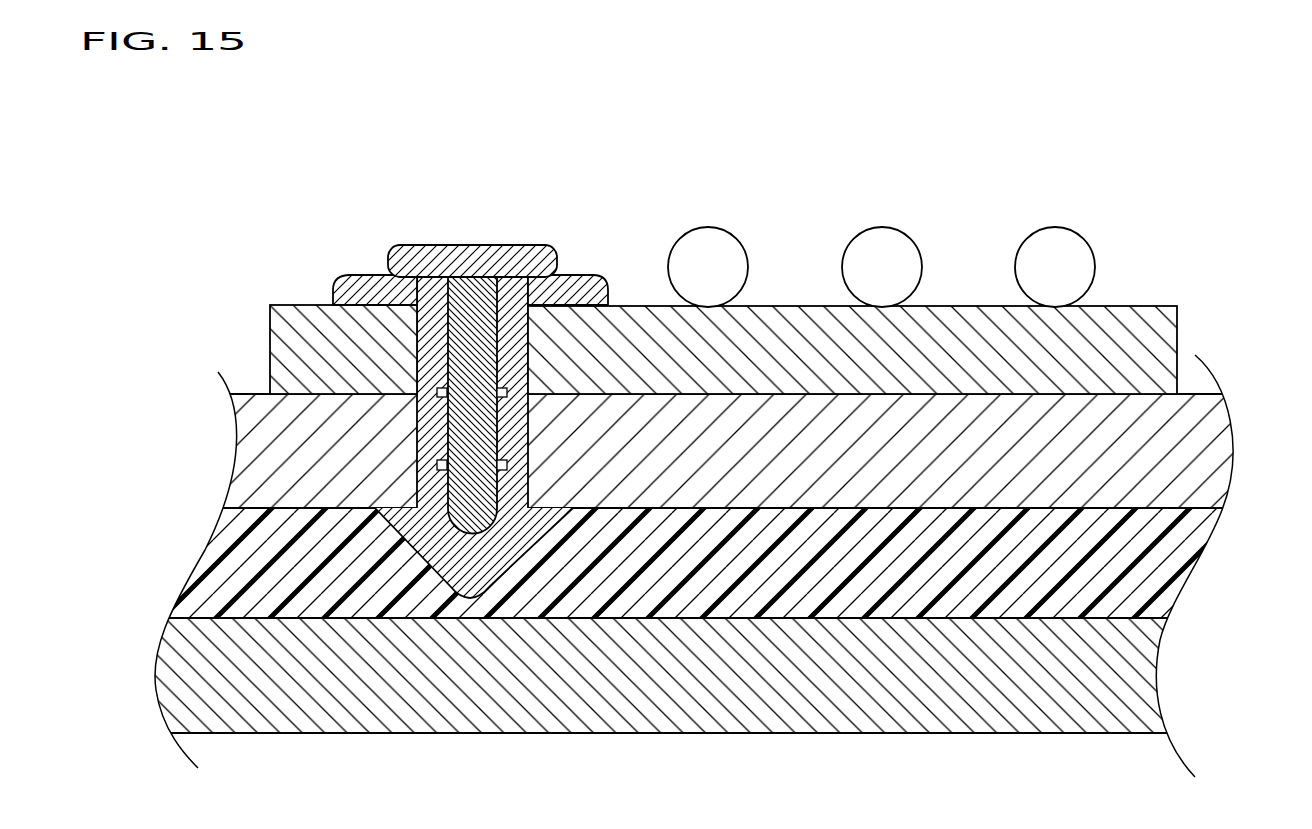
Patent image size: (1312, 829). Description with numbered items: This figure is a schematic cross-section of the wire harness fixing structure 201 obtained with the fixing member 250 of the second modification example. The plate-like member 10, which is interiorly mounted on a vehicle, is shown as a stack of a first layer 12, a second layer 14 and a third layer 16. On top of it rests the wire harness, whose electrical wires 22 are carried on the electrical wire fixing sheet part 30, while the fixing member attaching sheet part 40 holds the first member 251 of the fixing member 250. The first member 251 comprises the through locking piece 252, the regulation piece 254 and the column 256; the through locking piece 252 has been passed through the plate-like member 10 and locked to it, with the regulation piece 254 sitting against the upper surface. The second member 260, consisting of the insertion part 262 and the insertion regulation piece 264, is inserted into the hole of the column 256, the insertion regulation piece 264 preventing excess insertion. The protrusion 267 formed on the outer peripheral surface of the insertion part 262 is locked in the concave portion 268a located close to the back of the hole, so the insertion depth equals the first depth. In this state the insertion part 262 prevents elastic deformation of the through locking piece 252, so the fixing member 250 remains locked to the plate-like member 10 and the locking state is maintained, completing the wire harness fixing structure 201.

The wire harness fixing structure 201 is at (268, 149).
The plate-like member 10 is at (957, 734).
The first layer 12 is at (1226, 447).
The second layer 14 is at (1178, 573).
The third layer 16 is at (1138, 680).
The electrical wires 22 is at (1052, 250).
The electrical wire fixing sheet part 30 is at (1160, 331).
The fixing member attaching sheet part 40 is at (405, 318).
The fixing member 250 is at (642, 168).
The first member 251 is at (581, 273).
The through locking piece 252 is at (375, 537).
The regulation piece 254 is at (356, 283).
The column 256 is at (430, 410).
The second member 260 is at (528, 243).
The insertion part 262 is at (472, 358).
The insertion regulation piece 264 is at (418, 247).
The protrusion 267 is at (440, 460).
The concave portion 268a is at (433, 470).